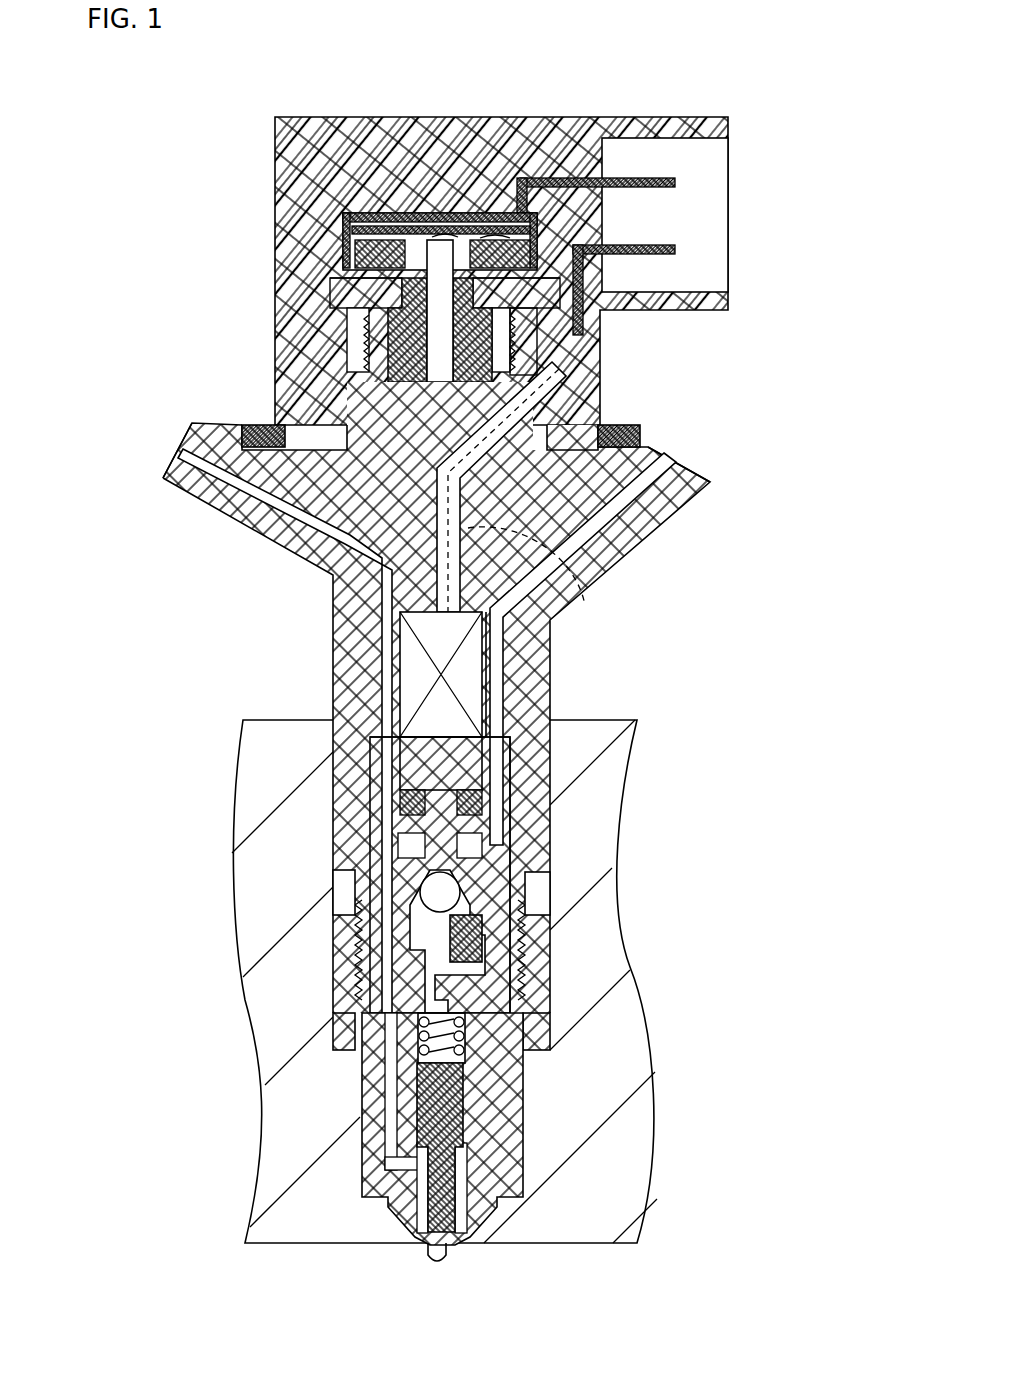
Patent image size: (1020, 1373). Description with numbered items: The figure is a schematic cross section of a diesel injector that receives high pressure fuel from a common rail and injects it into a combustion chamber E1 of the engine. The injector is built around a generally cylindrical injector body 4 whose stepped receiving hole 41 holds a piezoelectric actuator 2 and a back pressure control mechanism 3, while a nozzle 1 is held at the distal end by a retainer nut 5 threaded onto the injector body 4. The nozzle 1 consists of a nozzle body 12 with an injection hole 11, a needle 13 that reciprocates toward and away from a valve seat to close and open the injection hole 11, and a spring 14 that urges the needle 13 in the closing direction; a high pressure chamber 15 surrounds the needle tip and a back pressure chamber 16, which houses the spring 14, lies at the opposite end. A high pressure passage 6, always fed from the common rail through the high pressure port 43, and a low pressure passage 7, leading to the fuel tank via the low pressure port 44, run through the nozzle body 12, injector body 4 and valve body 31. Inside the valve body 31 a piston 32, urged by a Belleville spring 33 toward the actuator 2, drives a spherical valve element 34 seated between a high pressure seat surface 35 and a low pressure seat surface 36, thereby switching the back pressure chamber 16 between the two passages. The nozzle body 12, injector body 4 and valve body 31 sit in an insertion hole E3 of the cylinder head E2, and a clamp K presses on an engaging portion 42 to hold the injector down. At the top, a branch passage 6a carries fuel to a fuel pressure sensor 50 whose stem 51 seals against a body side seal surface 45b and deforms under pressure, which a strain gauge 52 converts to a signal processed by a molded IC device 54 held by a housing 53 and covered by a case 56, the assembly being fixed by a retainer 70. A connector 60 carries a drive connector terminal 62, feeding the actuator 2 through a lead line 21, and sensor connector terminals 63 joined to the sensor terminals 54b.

The nozzle 1 is at (500, 1215).
The piezoelectric actuator 2 is at (420, 690).
The back pressure control mechanism 3 is at (520, 815).
The injector body 4 is at (345, 640).
The retainer nut 5 is at (352, 1000).
The high pressure passage 6 is at (245, 500).
The branch passage 6a is at (412, 415).
The low pressure passage 7 is at (598, 533).
The injection hole 11 is at (448, 1257).
The nozzle body 12 is at (510, 1085).
The needle 13 is at (455, 1112).
The spring 14 is at (470, 1022).
The high pressure chamber 15 is at (460, 1175).
The back pressure chamber 16 is at (455, 1052).
The lead line 21 is at (585, 607).
The valve body 31 is at (548, 765).
The piston 32 is at (440, 760).
The Belleville spring 33 is at (430, 800).
The valve element 34 is at (430, 880).
The high pressure seat surface 35 is at (545, 985).
The low pressure seat surface 36 is at (545, 945).
The receiving hole 41 is at (478, 708).
The engaging portion 42 is at (265, 435).
The high pressure port 43 is at (175, 485).
The low pressure port 44 is at (692, 498).
The body side seal surface 45b is at (548, 410).
The fuel pressure sensor 50 is at (498, 345).
The stem 51 is at (520, 318).
The strain gauge 52 is at (446, 232).
The housing 53 is at (360, 255).
The molded IC device 54 is at (352, 230).
The sensor terminals 54b is at (505, 238).
The case 56 is at (348, 218).
The connector 60 is at (767, 92).
The drive connector terminal 62 is at (660, 253).
The sensor connector terminals 63 is at (660, 186).
The retainer 70 is at (340, 292).
The clamp K is at (262, 430).
The combustion chamber E1 is at (463, 1316).
The cylinder head E2 is at (278, 1245).
The insertion hole E3 is at (360, 1243).